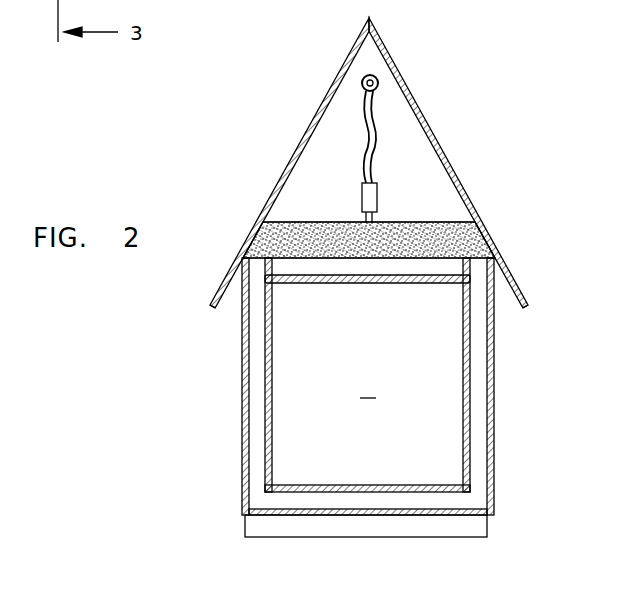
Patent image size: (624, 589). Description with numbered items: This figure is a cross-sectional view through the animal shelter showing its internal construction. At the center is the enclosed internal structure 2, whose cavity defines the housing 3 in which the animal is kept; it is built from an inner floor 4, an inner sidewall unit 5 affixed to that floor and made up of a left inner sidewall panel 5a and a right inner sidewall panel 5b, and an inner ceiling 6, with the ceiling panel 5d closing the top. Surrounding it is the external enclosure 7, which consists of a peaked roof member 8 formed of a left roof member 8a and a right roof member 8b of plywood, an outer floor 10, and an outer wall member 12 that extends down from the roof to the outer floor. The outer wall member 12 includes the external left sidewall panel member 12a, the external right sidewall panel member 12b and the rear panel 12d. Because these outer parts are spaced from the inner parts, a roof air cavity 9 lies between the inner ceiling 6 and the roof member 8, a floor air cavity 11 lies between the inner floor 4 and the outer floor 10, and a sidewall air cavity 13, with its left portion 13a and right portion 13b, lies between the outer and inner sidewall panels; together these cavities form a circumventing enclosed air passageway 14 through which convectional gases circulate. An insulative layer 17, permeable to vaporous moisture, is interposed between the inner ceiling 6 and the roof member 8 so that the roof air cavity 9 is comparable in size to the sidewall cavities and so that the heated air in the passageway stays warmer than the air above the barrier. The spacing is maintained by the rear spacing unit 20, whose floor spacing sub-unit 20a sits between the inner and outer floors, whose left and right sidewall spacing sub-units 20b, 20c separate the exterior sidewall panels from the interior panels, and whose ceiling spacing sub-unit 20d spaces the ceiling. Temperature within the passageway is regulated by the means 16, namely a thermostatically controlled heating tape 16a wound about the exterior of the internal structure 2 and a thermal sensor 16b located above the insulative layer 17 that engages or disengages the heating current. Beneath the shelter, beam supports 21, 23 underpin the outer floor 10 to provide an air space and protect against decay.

The internal structure 2 is at (467, 322).
The housing 3 is at (368, 387).
The inner floor 4 is at (374, 494).
The inner sidewall unit 5 is at (266, 363).
The inner sidewall panel 5a is at (266, 392).
The inner sidewall panel 5b is at (468, 471).
The inner ceiling panel 5d is at (360, 284).
The inner ceiling 6 is at (313, 283).
The external enclosure 7 is at (242, 432).
The roof member 8 is at (455, 178).
The left roof member 8a is at (252, 232).
The right roof member 8b is at (501, 262).
The roof air cavity 9 is at (342, 267).
The outer floor 10 is at (406, 537).
The floor air cavity 11 is at (448, 502).
The outer wall member 12 is at (494, 499).
The external left sidewall panel member 12a is at (243, 330).
The external right sidewall panel member 12b is at (492, 434).
The external enclosure rear panel 12d is at (398, 147).
The sidewall air cavity 13 is at (481, 457).
The sidewall air cavity portion 13a is at (251, 413).
The sidewall air cavity portion 13b is at (481, 358).
The air passageway 14 is at (481, 395).
The temperature regulating means 16 is at (375, 102).
The heating tape 16a is at (489, 412).
The thermal sensor 16b is at (378, 195).
The insulative layer 17 is at (316, 224).
The rear spacing unit 20 is at (243, 504).
The floor spacing sub-unit 20a is at (309, 505).
The left sidewall spacing sub-unit 20b is at (258, 452).
The right sidewall spacing sub-unit 20c is at (481, 338).
The ceiling spacing sub-unit 20d is at (413, 267).
The beam support 21 is at (314, 4).
The beam support 23 is at (258, 527).